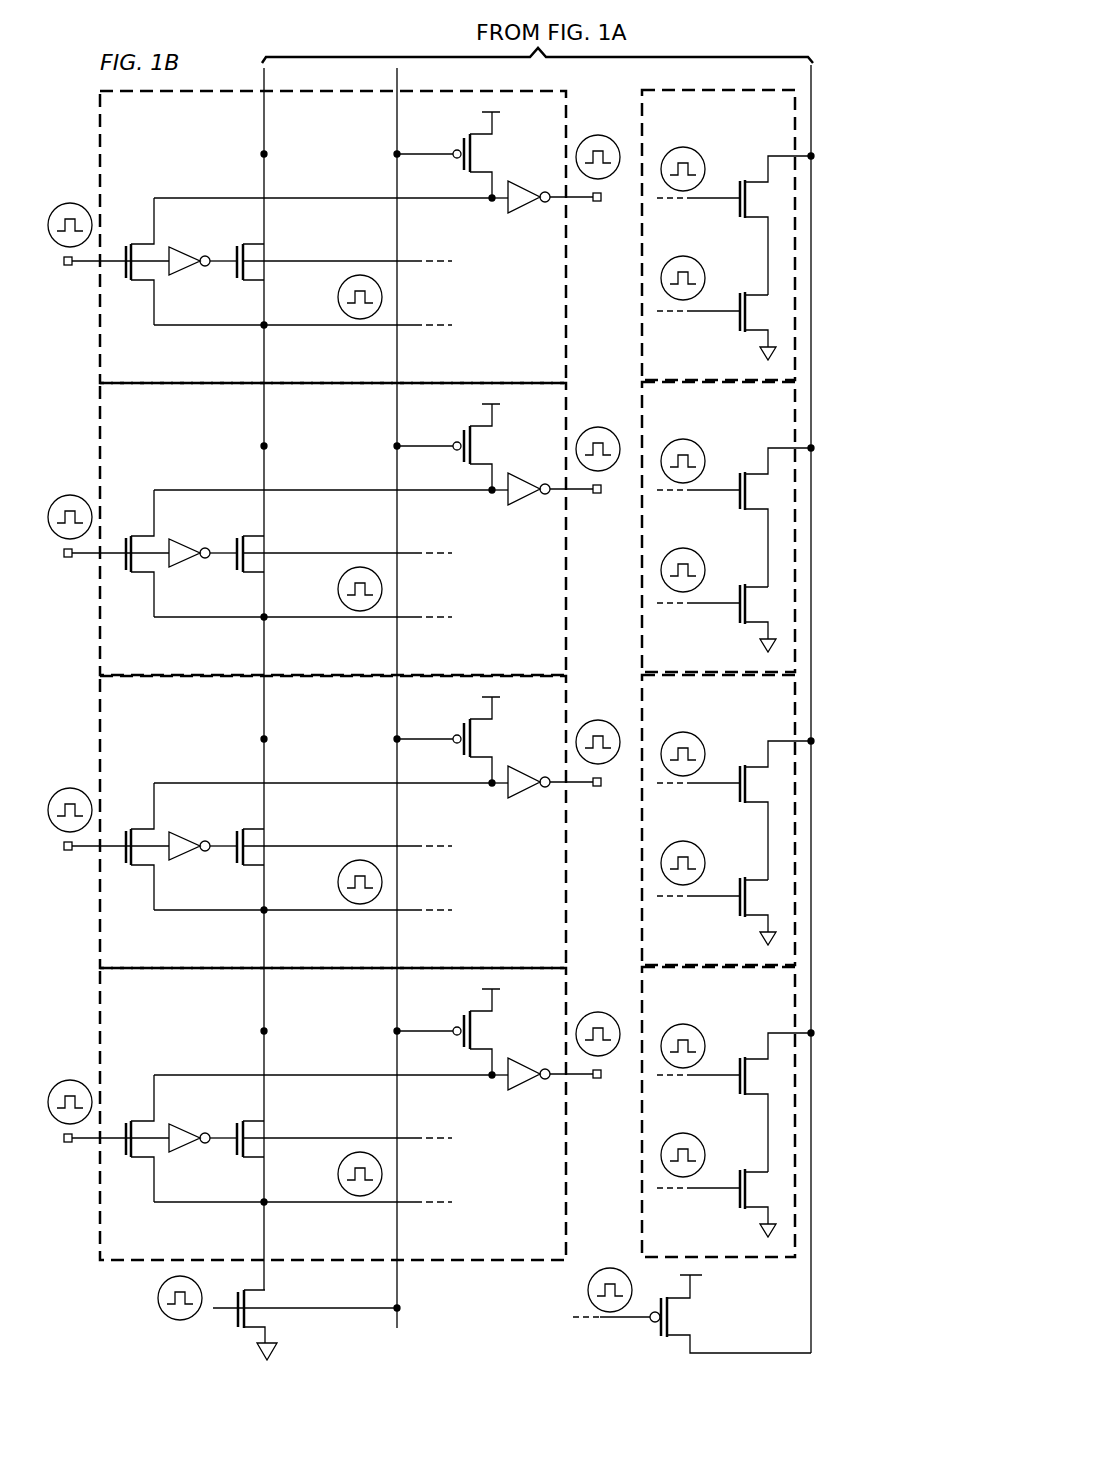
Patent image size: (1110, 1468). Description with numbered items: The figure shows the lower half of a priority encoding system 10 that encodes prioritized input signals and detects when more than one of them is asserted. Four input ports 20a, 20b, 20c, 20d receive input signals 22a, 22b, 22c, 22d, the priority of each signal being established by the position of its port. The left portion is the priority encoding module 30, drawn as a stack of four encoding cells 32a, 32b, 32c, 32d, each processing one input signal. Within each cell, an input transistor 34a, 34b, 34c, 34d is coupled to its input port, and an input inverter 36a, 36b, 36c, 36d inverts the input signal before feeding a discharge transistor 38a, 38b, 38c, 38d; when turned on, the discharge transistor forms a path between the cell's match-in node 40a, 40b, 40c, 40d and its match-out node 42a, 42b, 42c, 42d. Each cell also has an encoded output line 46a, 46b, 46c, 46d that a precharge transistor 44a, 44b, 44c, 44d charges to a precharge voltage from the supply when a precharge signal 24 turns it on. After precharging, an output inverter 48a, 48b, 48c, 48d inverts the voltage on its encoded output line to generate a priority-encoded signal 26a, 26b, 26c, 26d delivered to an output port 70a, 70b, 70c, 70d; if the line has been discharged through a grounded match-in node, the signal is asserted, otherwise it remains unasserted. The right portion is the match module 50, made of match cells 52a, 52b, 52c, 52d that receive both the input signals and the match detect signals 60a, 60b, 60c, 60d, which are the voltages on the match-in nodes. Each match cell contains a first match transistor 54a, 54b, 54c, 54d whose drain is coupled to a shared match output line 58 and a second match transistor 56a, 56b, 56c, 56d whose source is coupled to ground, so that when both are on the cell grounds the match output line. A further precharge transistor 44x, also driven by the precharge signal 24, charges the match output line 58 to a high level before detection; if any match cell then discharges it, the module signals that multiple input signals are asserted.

The priority encoding system 10 is at (858, 72).
The input port 20a is at (66, 1144).
The input port 20b is at (66, 852).
The input port 20c is at (66, 559).
The input port 20d is at (66, 267).
The input signal 22a is at (68, 1079).
The input signal 22b is at (68, 787).
The input signal 22c is at (68, 494).
The input signal 22d is at (68, 202).
The precharge signal 24 is at (157, 1300).
The priority-encoded signal 26a is at (606, 1011).
The priority-encoded signal 26b is at (606, 719).
The priority-encoded signal 26c is at (606, 426).
The priority-encoded signal 26d is at (606, 134).
The priority encoding module 30 is at (462, 1262).
The encoding cell 32a is at (524, 1189).
The encoding cell 32b is at (524, 897).
The encoding cell 32c is at (524, 604).
The encoding cell 32d is at (524, 312).
The input transistor 34a is at (118, 1123).
The input transistor 34b is at (118, 831).
The input transistor 34c is at (118, 538).
The input transistor 34d is at (118, 246).
The input inverter 36a is at (194, 1155).
The input inverter 36b is at (194, 863).
The input inverter 36c is at (194, 570).
The input inverter 36d is at (194, 278).
The discharge transistor 38a is at (233, 1129).
The discharge transistor 38b is at (233, 837).
The discharge transistor 38c is at (233, 544).
The discharge transistor 38d is at (233, 252).
The match-in node 40a is at (260, 1209).
The match-in node 40b is at (260, 917).
The match-in node 40c is at (260, 624).
The match-in node 40d is at (260, 332).
The match-out node 42a is at (272, 1032).
The match-out node 42b is at (272, 740).
The match-out node 42c is at (272, 447).
The match-out node 42d is at (272, 155).
The precharge transistor 44a is at (460, 1017).
The precharge transistor 44b is at (460, 725).
The precharge transistor 44c is at (460, 432).
The precharge transistor 44d is at (460, 140).
The precharge transistor 44x is at (656, 1322).
The encoded output line 46a is at (211, 1073).
The encoded output line 46b is at (211, 781).
The encoded output line 46c is at (211, 488).
The encoded output line 46d is at (211, 196).
The output inverter 48a is at (528, 1057).
The output inverter 48b is at (528, 765).
The output inverter 48c is at (528, 472).
The output inverter 48d is at (528, 180).
The match module 50 is at (727, 1260).
The match cell 52a is at (701, 1237).
The match cell 52b is at (701, 945).
The match cell 52c is at (701, 652).
The match cell 52d is at (701, 360).
The first match transistor 54a is at (738, 1057).
The first match transistor 54b is at (738, 765).
The first match transistor 54c is at (738, 472).
The first match transistor 54d is at (738, 180).
The second match transistor 56a is at (738, 1210).
The second match transistor 56b is at (738, 918).
The second match transistor 56c is at (738, 625).
The second match transistor 56d is at (738, 333).
The match output line 58 is at (812, 838).
The match detect signal 60a is at (337, 1168).
The match detect signal 60b is at (337, 876).
The match detect signal 60c is at (337, 583).
The match detect signal 60d is at (337, 291).
The output port 70a is at (600, 1081).
The output port 70b is at (600, 789).
The output port 70c is at (600, 496).
The output port 70d is at (600, 204).